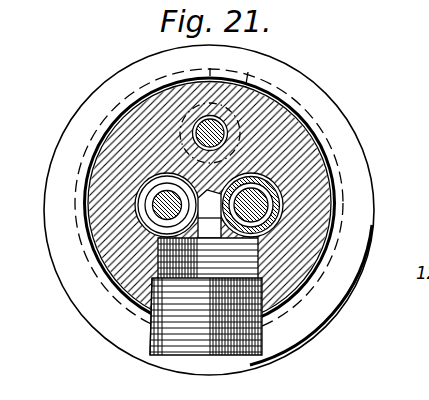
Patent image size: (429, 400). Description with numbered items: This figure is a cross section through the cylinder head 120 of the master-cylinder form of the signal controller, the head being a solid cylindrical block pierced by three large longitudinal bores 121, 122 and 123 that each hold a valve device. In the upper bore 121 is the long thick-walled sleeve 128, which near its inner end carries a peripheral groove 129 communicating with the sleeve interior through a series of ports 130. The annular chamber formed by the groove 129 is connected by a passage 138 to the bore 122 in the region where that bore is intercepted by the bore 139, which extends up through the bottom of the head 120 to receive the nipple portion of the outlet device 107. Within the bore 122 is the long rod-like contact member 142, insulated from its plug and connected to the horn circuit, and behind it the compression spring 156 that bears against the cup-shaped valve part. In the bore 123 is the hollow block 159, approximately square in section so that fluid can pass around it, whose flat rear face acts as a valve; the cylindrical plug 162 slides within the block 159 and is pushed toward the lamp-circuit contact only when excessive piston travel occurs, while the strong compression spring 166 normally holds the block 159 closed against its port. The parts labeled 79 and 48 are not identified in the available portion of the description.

The housing 79 is at (357, 165).
The cylinder head 120 is at (147, 108).
The longitudinal bore 121 is at (278, 97).
The longitudinal bore 122 is at (150, 206).
The longitudinal bore 123 is at (268, 207).
The sleeve 128 is at (252, 68).
The peripheral groove 129 is at (247, 146).
The ports 130 is at (210, 71).
The passage 138 is at (114, 121).
The bore 139 is at (258, 262).
The contact member 142 is at (157, 203).
The bearing 48 is at (147, 183).
The compression spring 156 is at (209, 203).
The block 159 is at (280, 234).
The cylindrical plug 162 is at (267, 177).
The compression spring 166 is at (284, 193).
The outlet device 107 is at (152, 350).